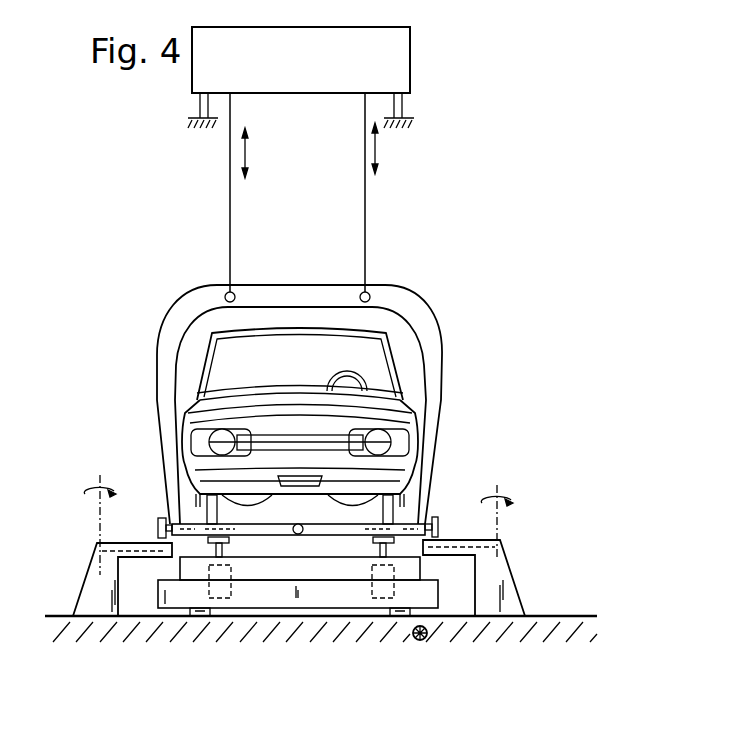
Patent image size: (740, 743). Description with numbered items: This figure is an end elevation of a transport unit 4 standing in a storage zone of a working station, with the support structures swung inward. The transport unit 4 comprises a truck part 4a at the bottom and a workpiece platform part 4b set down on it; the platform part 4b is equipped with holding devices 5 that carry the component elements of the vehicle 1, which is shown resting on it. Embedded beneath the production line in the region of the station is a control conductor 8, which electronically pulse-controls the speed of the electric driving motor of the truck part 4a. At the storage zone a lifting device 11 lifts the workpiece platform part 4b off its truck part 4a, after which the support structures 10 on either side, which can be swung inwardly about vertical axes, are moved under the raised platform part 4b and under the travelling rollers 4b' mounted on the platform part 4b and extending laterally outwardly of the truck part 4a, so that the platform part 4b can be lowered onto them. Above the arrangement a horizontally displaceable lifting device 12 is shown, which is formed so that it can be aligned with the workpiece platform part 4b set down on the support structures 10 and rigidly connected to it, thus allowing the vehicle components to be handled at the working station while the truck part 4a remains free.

The vehicle 1 is at (400, 349).
The lifting device 12 is at (389, 293).
The transport unit 4 is at (310, 553).
The truck part 4a is at (262, 599).
The workpiece platform part 4b is at (298, 565).
The travelling rollers 4b' is at (310, 498).
The holding devices 5 is at (226, 506).
The control conductor 8 is at (425, 642).
The support structures 10 is at (94, 572).
The lifting device 11 is at (210, 546).